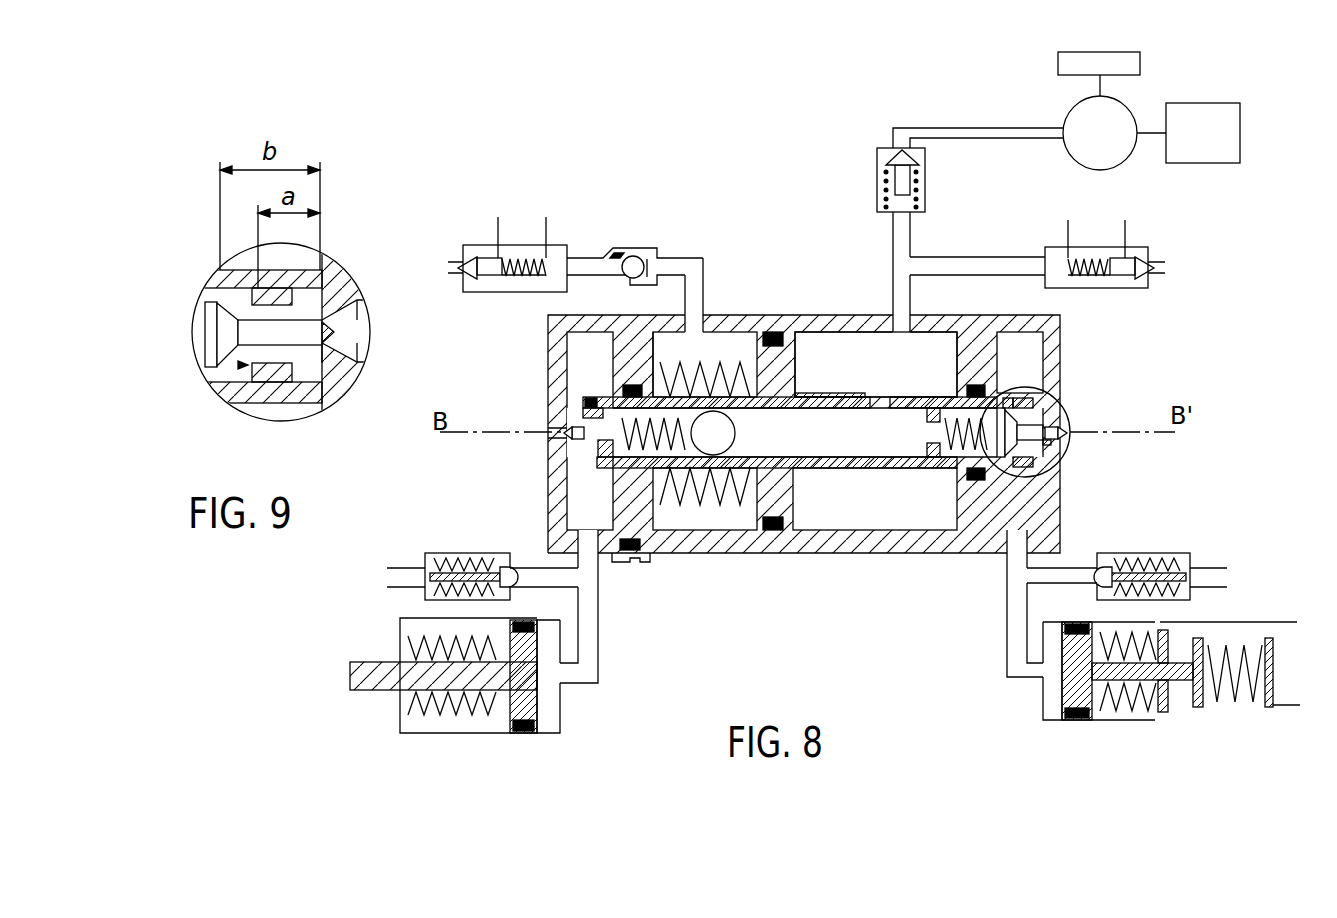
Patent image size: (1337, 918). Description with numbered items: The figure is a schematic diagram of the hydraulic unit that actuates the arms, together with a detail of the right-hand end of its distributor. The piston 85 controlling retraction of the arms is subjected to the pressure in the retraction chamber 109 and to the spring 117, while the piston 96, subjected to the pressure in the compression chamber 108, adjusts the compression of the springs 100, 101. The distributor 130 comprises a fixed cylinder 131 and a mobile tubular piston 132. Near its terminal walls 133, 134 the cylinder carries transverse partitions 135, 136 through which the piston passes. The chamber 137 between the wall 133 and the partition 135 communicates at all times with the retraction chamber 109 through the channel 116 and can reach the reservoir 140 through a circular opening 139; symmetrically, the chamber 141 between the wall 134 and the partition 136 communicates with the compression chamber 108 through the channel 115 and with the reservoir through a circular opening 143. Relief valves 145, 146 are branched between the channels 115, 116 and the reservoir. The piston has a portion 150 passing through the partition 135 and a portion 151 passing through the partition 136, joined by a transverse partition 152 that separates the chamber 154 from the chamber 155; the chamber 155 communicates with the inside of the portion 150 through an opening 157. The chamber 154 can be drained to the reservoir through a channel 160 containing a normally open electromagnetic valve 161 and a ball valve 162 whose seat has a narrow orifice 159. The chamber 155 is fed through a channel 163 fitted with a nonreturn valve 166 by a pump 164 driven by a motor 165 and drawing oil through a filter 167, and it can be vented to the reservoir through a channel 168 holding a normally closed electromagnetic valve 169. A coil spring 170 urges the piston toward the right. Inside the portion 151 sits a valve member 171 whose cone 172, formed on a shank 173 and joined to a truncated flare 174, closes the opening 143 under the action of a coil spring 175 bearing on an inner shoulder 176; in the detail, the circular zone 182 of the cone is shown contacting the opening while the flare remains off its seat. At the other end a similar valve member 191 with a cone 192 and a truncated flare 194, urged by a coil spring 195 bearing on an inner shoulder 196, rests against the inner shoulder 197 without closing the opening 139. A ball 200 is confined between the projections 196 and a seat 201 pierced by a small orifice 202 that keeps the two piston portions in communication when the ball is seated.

In FIG. 8, the piston 85 is at (525, 718).
In FIG. 8, the piston 96 is at (1087, 697).
In FIG. 8, the spring 100 is at (1250, 697).
In FIG. 8, the spring 101 is at (1120, 698).
In FIG. 8, the compression chamber 108 is at (1047, 693).
In FIG. 8, the retraction chamber 109 is at (548, 706).
In FIG. 8, the channel 115 is at (1007, 636).
In FIG. 8, the channel 116 is at (592, 622).
In FIG. 8, the spring 117 is at (477, 713).
In FIG. 8, the distributor 130 is at (872, 556).
In FIG. 8, the fixed cylinder 131 is at (707, 350).
In FIG. 8, the mobile piston 132 is at (820, 392).
In FIG. 8, the terminal wall 133 is at (548, 322).
In FIG. 8, the terminal wall 134 is at (1052, 478).
In FIG. 8, the transverse partition 135 is at (630, 540).
In FIG. 8, the transverse partition 136 is at (962, 545).
In FIG. 8, the chamber 137 is at (575, 517).
In FIG. 8, the circular opening 139 is at (545, 430).
In FIG. 8, the reservoir 140 is at (458, 258).
In FIG. 8, the chamber 141 is at (1028, 503).
In FIG. 8, the circular opening 143 is at (1047, 450).
In FIG. 9, the circular opening 143 is at (327, 333).
In FIG. 8, the relief valve 145 is at (1167, 563).
In FIG. 8, the relief valve 146 is at (450, 563).
In FIG. 8, the piston portion 150 is at (690, 468).
In FIG. 8, the piston portion 151 is at (952, 468).
In FIG. 8, the transverse partition 152 is at (752, 530).
In FIG. 8, the chamber 154 is at (712, 355).
In FIG. 8, the chamber 155 is at (857, 348).
In FIG. 8, the opening 157 is at (885, 400).
In FIG. 8, the narrow orifice 159 is at (612, 254).
In FIG. 8, the channel 160 is at (694, 258).
In FIG. 8, the electromagnetic valve 161 is at (515, 258).
In FIG. 8, the ball valve 162 is at (636, 256).
In FIG. 8, the channel 163 is at (900, 305).
In FIG. 8, the pump 164 is at (1087, 115).
In FIG. 8, the motor 165 is at (1218, 110).
In FIG. 8, the nonreturn valve 166 is at (877, 176).
In FIG. 8, the filter 167 is at (1060, 64).
In FIG. 8, the channel 168 is at (976, 262).
In FIG. 8, the electromagnetic valve 169 is at (1093, 258).
In FIG. 8, the coil spring 170 is at (745, 395).
In FIG. 8, the valve member 171 is at (1043, 392).
In FIG. 8, the cone 172 is at (1052, 442).
In FIG. 8, the shank 173 is at (1040, 425).
In FIG. 8, the truncated flare 174 is at (990, 400).
In FIG. 8, the coil spring 175 is at (925, 428).
In FIG. 8, the inner shoulder 176 is at (935, 462).
In FIG. 9, the circular zone 182 is at (320, 347).
In FIG. 8, the valve member 191 is at (590, 455).
In FIG. 8, the cone 192 is at (570, 448).
In FIG. 8, the truncated flare 194 is at (625, 415).
In FIG. 8, the coil spring 195 is at (617, 398).
In FIG. 8, the inner shoulder 196 is at (703, 540).
In FIG. 8, the inner shoulder 197 is at (590, 400).
In FIG. 8, the ball 200 is at (745, 435).
In FIG. 8, the inner shoulder 201 is at (777, 465).
In FIG. 8, the small orifice 202 is at (757, 414).